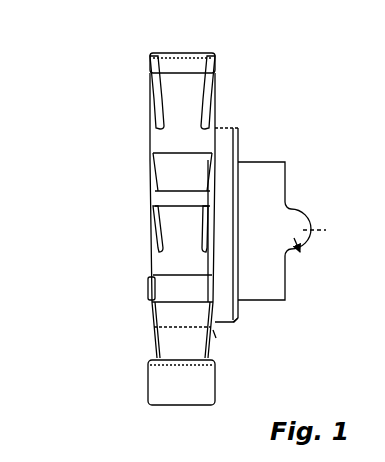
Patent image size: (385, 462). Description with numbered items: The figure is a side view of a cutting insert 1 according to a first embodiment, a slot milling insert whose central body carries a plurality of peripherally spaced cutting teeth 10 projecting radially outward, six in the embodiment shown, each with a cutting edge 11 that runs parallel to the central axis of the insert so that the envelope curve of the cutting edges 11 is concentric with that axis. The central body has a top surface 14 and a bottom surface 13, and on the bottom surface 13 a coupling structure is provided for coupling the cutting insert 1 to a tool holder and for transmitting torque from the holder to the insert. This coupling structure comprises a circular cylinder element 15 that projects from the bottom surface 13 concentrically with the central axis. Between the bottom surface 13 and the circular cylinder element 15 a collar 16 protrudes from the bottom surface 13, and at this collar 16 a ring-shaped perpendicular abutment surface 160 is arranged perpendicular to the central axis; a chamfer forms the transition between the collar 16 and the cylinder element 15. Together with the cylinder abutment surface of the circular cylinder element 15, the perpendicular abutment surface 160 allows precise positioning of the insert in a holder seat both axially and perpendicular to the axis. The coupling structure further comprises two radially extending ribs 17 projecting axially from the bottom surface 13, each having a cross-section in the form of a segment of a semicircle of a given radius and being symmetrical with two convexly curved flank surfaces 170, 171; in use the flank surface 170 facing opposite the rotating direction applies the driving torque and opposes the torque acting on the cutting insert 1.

The cutting insert 1 is at (80, 94).
The cutting teeth 10 is at (188, 82).
The cutting edges 11 is at (148, 147).
The bottom surface 13 is at (224, 337).
The top surface 14 is at (102, 276).
The circular cylinder element 15 is at (260, 164).
The collar 16 is at (228, 137).
The ribs 17 is at (310, 222).
The perpendicular abutment surface 160 is at (238, 321).
The convexly curved flank surface 170 is at (296, 261).
The convexly curved flank surface 171 is at (297, 206).